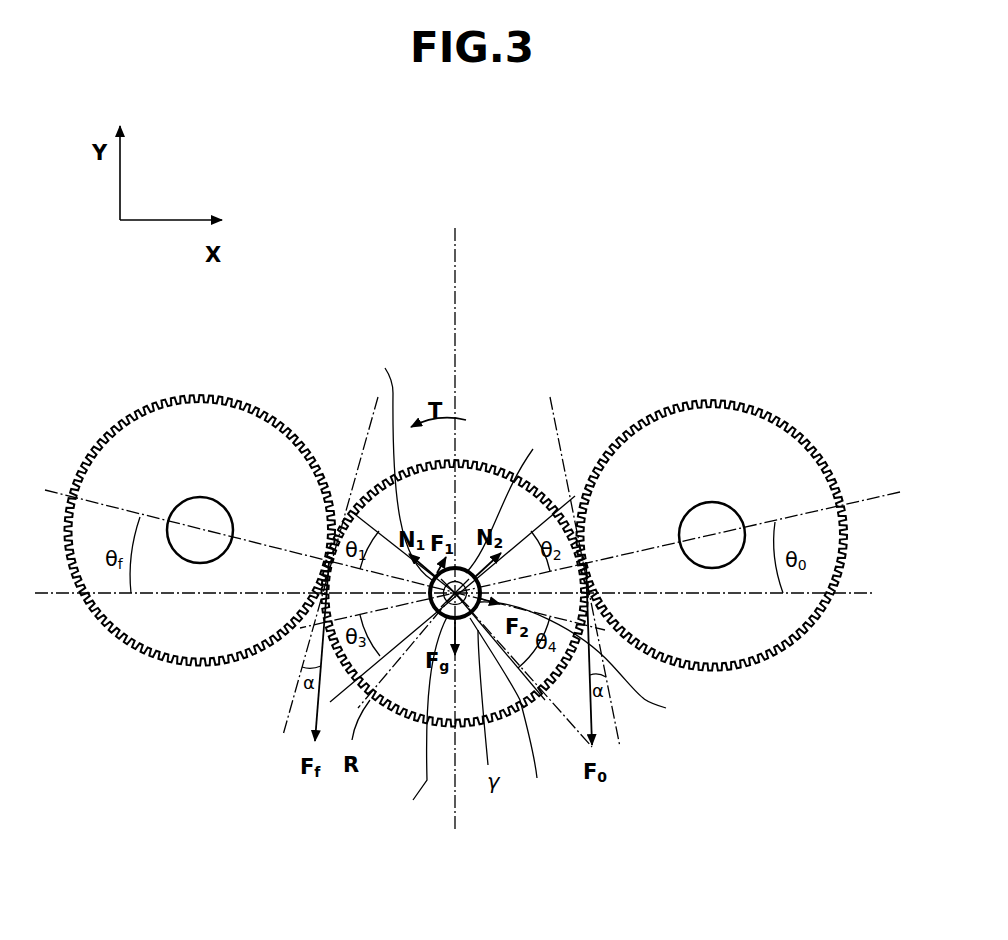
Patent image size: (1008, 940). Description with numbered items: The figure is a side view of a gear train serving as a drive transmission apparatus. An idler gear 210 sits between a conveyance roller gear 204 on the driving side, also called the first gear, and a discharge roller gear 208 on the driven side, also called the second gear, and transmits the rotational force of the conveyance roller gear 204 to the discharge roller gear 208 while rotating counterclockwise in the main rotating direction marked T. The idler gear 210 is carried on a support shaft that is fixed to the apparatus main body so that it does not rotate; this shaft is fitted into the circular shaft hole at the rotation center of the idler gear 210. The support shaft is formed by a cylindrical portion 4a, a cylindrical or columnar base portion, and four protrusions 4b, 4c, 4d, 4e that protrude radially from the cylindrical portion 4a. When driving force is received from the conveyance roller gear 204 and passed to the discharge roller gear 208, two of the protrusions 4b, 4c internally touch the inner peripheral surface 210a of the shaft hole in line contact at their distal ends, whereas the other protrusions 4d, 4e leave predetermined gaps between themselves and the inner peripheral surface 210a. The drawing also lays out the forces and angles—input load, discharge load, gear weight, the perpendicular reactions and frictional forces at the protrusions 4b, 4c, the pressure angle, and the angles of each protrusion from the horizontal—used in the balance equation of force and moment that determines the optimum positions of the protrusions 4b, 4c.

The conveyance roller gear 204 is at (173, 430).
The discharge roller gear 208 is at (738, 420).
The idler gear 210 is at (470, 485).
The inner peripheral surface 210a is at (443, 618).
The cylindrical portion 4a is at (507, 499).
The protrusion 4b is at (402, 462).
The protrusion 4c is at (588, 662).
The protrusion 4d is at (427, 717).
The protrusion 4e is at (511, 713).